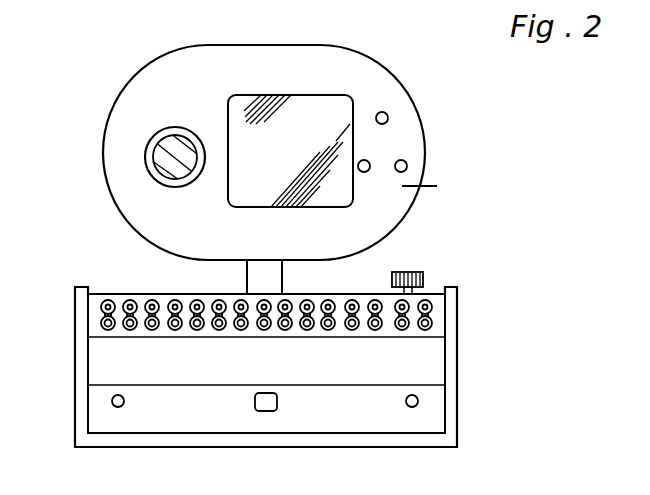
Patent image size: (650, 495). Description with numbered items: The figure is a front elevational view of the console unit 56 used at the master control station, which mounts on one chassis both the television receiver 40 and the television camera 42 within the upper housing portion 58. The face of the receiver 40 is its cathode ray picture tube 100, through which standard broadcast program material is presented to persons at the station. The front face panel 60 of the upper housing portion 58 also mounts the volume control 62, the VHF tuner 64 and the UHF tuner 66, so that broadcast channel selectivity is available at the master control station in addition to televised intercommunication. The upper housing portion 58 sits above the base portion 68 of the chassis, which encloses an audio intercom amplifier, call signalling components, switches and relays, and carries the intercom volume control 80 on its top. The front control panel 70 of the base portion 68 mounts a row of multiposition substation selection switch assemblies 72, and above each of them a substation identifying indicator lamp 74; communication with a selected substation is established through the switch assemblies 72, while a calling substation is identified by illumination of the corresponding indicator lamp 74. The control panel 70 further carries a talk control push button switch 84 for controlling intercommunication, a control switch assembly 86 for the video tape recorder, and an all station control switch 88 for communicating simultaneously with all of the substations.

The console unit 56 is at (92, 128).
The television camera 42 is at (175, 127).
The cathode ray picture tube 100 is at (244, 108).
The television receiver 40 is at (299, 122).
The upper housing portion 58 is at (399, 97).
The VHF tuner 64 is at (389, 118).
The UHF tuner 66 is at (365, 172).
The volume control 62 is at (407, 166).
The front face panel 60 is at (433, 192).
The base portion 68 is at (456, 360).
The intercom volume control 80 is at (415, 272).
The front control panel 70 is at (438, 318).
The substation identifying indicator lamp 74 is at (152, 300).
The multiposition substation selection switch assembly 72 is at (149, 330).
The talk control push button switch 84 is at (266, 393).
The control switch assembly for the video tape recorder 86 is at (124, 401).
The all station control switch 88 is at (410, 395).